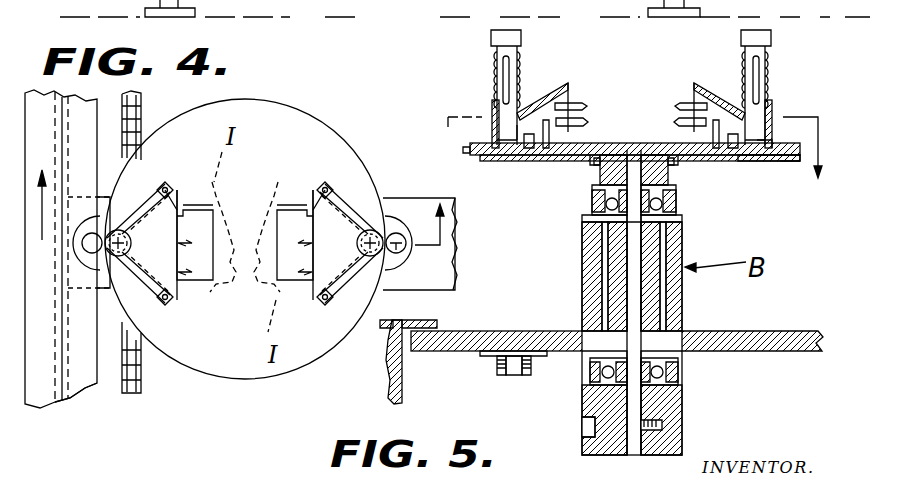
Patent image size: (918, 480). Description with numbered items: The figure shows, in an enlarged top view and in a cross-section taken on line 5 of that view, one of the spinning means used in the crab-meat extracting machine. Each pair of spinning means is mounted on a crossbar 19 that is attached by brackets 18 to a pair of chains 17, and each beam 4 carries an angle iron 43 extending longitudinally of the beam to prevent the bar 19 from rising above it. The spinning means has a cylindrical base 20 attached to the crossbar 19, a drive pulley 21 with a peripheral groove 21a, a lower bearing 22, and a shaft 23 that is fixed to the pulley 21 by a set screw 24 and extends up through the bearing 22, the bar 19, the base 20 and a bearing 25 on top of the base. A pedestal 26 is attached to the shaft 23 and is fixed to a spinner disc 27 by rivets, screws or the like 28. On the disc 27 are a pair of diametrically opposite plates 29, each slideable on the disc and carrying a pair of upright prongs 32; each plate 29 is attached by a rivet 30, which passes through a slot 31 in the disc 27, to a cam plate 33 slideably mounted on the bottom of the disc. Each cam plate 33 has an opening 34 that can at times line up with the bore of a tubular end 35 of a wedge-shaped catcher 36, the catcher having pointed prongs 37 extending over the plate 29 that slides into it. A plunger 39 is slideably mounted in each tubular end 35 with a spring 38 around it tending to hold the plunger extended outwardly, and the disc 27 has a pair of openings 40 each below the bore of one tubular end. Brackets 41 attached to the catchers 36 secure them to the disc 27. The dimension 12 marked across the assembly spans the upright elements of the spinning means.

In FIG. 5, the beam 4 is at (388, 342).
In FIG. 4, the section line 5— 5 is at (244, 230).
In FIG. 5, the cutting zone width 12 is at (638, 137).
In FIG. 4, the chains 17 is at (141, 380).
In FIG. 5, the chains 17 is at (516, 376).
In FIG. 5, the brackets 18 is at (495, 367).
In FIG. 4, the crossbar 19 is at (432, 292).
In FIG. 5, the crossbar 19 is at (740, 333).
In FIG. 5, the cylindrical base 20 is at (662, 292).
In FIG. 5, the drive pulley 21 is at (684, 398).
In FIG. 5, the peripheral groove 21a is at (580, 422).
In FIG. 5, the bearing 22 is at (664, 374).
In FIG. 5, the shaft 23 is at (626, 290).
In FIG. 5, the set screw 24 is at (645, 457).
In FIG. 5, the bearing 25 is at (668, 216).
In FIG. 5, the pedestal 26 is at (606, 176).
In FIG. 4, the spinner disc 27 is at (288, 128).
In FIG. 5, the spinner disc 27 is at (610, 143).
In FIG. 5, the rivets, screws or the like 28 is at (676, 168).
In FIG. 4, the plates 29 is at (270, 262).
In FIG. 5, the plates 29 is at (700, 124).
In FIG. 5, the rivet 30 is at (728, 162).
In FIG. 5, the slot 31 is at (530, 162).
In FIG. 5, the upright prongs 32 is at (540, 140).
In FIG. 4, the cam plate 33 is at (386, 212).
In FIG. 5, the cam plate 33 is at (755, 162).
In FIG. 4, the opening 34 is at (398, 236).
In FIG. 5, the opening 34 is at (790, 163).
In FIG. 5, the tubular end 35 is at (772, 104).
In FIG. 4, the wedge shaped catcher 36 is at (334, 206).
In FIG. 5, the wedge shaped catcher 36 is at (698, 86).
In FIG. 4, the pointed prongs 37 is at (304, 205).
In FIG. 5, the pointed prongs 37 is at (704, 162).
In FIG. 5, the spring 38 is at (770, 64).
In FIG. 4, the plunger 39 is at (364, 262).
In FIG. 5, the plunger 39 is at (772, 38).
In FIG. 5, the openings 40 is at (770, 140).
In FIG. 4, the brackets 41 is at (327, 303).
In FIG. 4, the angle iron 43 is at (82, 395).
In FIG. 5, the angle iron 43 is at (437, 321).